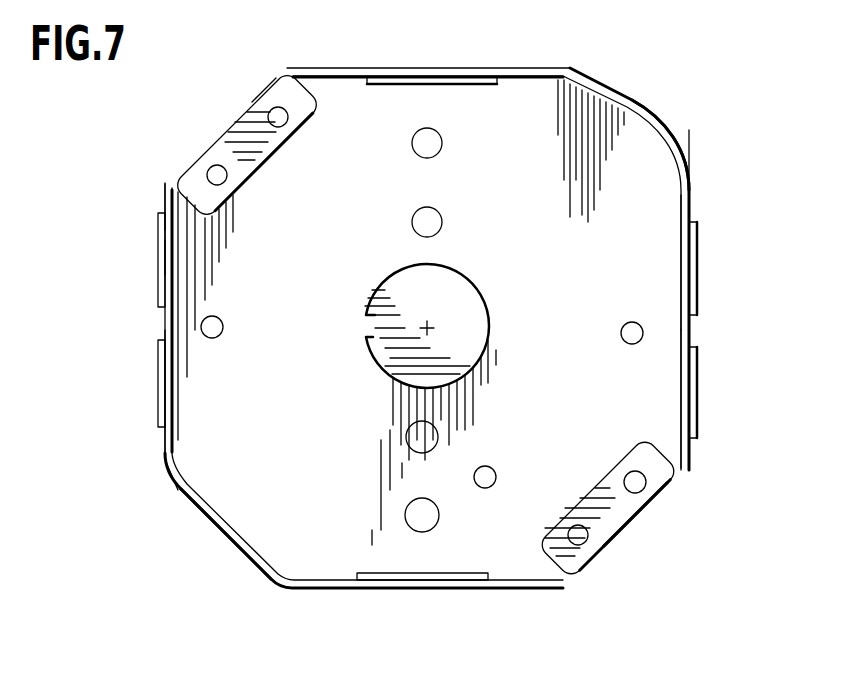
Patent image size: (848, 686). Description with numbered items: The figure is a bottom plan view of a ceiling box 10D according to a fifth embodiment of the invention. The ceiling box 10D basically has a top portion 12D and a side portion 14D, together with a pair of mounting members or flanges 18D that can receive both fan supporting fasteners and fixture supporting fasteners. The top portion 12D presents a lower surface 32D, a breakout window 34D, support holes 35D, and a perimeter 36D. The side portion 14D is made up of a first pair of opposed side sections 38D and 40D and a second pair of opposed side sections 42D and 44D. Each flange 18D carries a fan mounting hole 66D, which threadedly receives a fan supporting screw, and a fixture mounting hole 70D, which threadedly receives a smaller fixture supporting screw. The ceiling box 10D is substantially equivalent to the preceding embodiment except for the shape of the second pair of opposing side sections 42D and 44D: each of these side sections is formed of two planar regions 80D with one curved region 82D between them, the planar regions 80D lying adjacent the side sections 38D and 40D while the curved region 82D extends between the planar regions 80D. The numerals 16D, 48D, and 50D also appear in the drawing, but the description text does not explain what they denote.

The ceiling box 10D is at (150, 146).
The top portion 12D is at (632, 241).
The side portion 14D is at (158, 443).
The side wall 16D is at (637, 398).
The mounting flange 18D is at (222, 152).
The lower surface 32D is at (305, 425).
The breakout window 34D is at (158, 301).
The support holes 35D is at (432, 226).
The perimeter 36D is at (165, 198).
The side section 38D is at (257, 97).
The side section 40D is at (672, 490).
The side section 42D is at (188, 519).
The side section 44D is at (649, 105).
The chamfered wall 48D is at (262, 572).
The center of knockout 50D is at (430, 326).
The fan mounting hole 66D is at (217, 173).
The fixture mounting hole 70D is at (287, 118).
The planar region 80D is at (497, 68).
The curved region 82D is at (687, 160).